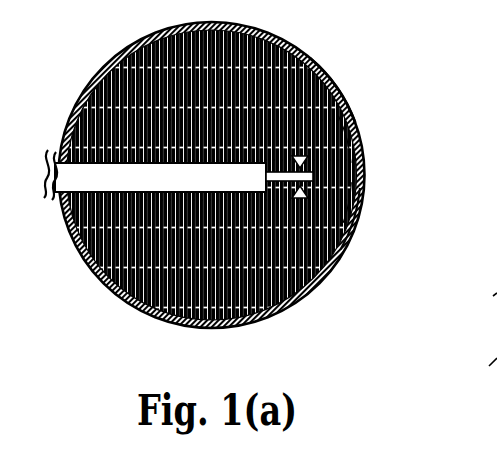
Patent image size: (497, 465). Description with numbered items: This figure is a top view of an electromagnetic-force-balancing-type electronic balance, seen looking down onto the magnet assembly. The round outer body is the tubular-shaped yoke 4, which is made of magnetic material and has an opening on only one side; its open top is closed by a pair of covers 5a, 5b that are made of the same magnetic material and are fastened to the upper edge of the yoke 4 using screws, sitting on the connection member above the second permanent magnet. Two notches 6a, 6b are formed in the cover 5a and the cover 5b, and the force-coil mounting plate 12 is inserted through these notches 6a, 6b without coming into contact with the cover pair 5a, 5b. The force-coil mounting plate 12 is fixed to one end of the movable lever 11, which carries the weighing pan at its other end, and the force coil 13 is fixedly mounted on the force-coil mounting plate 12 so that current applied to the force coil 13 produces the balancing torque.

The yoke 4 is at (327, 273).
The cover 5a is at (338, 92).
The cover 5b is at (350, 216).
The notch 6a is at (350, 147).
The notch 6b is at (350, 187).
The movable lever 11 is at (352, 121).
The force-coil mounting plate 12 is at (350, 157).
The force coil 13 is at (493, 296).